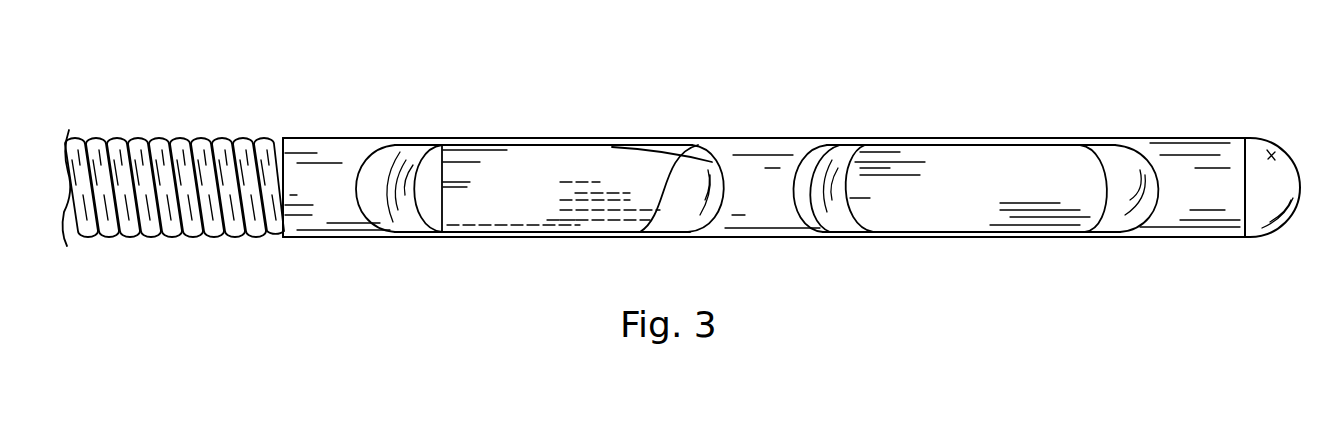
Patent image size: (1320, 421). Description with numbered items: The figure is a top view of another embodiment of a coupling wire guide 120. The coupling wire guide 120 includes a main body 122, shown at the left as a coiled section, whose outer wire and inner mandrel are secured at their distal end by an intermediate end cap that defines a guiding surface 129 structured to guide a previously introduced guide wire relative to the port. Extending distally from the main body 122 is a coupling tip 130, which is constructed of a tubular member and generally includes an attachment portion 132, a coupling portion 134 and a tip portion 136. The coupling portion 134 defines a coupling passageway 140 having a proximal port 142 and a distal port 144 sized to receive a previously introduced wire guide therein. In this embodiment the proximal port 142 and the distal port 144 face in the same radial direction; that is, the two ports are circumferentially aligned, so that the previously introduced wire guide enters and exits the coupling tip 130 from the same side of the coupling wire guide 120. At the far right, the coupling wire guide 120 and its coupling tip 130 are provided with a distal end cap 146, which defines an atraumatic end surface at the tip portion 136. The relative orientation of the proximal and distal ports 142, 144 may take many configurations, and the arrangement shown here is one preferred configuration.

The coupling wire guide 120 is at (247, 59).
The main body 122 is at (114, 139).
The guiding surface 129 is at (395, 192).
The coupling tip 130 is at (696, 109).
The attachment portion 132 is at (331, 240).
The coupling portion 134 is at (777, 240).
The tip portion 136 is at (1243, 240).
The coupling passageway 140 is at (540, 194).
The proximal port 142 is at (612, 147).
The distal port 144 is at (862, 147).
The distal end cap 146 is at (1281, 148).